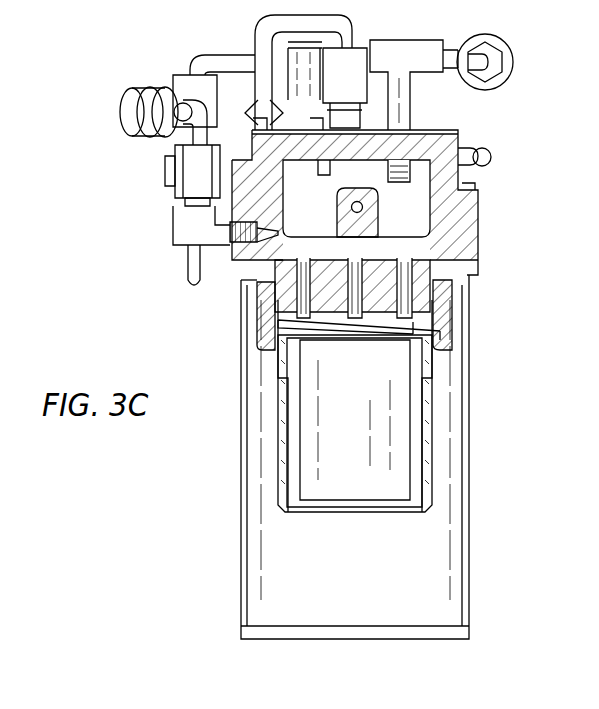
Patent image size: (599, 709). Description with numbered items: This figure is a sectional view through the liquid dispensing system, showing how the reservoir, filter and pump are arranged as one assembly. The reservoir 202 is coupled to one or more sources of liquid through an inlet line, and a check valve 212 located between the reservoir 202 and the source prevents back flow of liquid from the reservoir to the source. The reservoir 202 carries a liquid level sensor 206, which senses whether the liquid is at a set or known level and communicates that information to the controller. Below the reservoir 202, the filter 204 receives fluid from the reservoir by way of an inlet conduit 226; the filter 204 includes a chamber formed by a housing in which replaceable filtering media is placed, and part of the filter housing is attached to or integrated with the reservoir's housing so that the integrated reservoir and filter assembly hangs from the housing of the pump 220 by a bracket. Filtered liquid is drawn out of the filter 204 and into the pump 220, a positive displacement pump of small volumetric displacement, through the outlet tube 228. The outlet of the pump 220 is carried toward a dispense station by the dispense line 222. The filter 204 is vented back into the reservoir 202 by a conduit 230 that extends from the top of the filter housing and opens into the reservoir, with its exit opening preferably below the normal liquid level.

The reservoir 202 is at (388, 224).
The filter 204 is at (306, 423).
The liquid level sensor 206 is at (441, 82).
The check valve 212 is at (142, 180).
The pump 220 is at (386, 457).
The dispense line 222 is at (496, 181).
The inlet conduit 226 is at (476, 396).
The outlet tube 228 is at (359, 346).
The conduit 230 is at (241, 367).